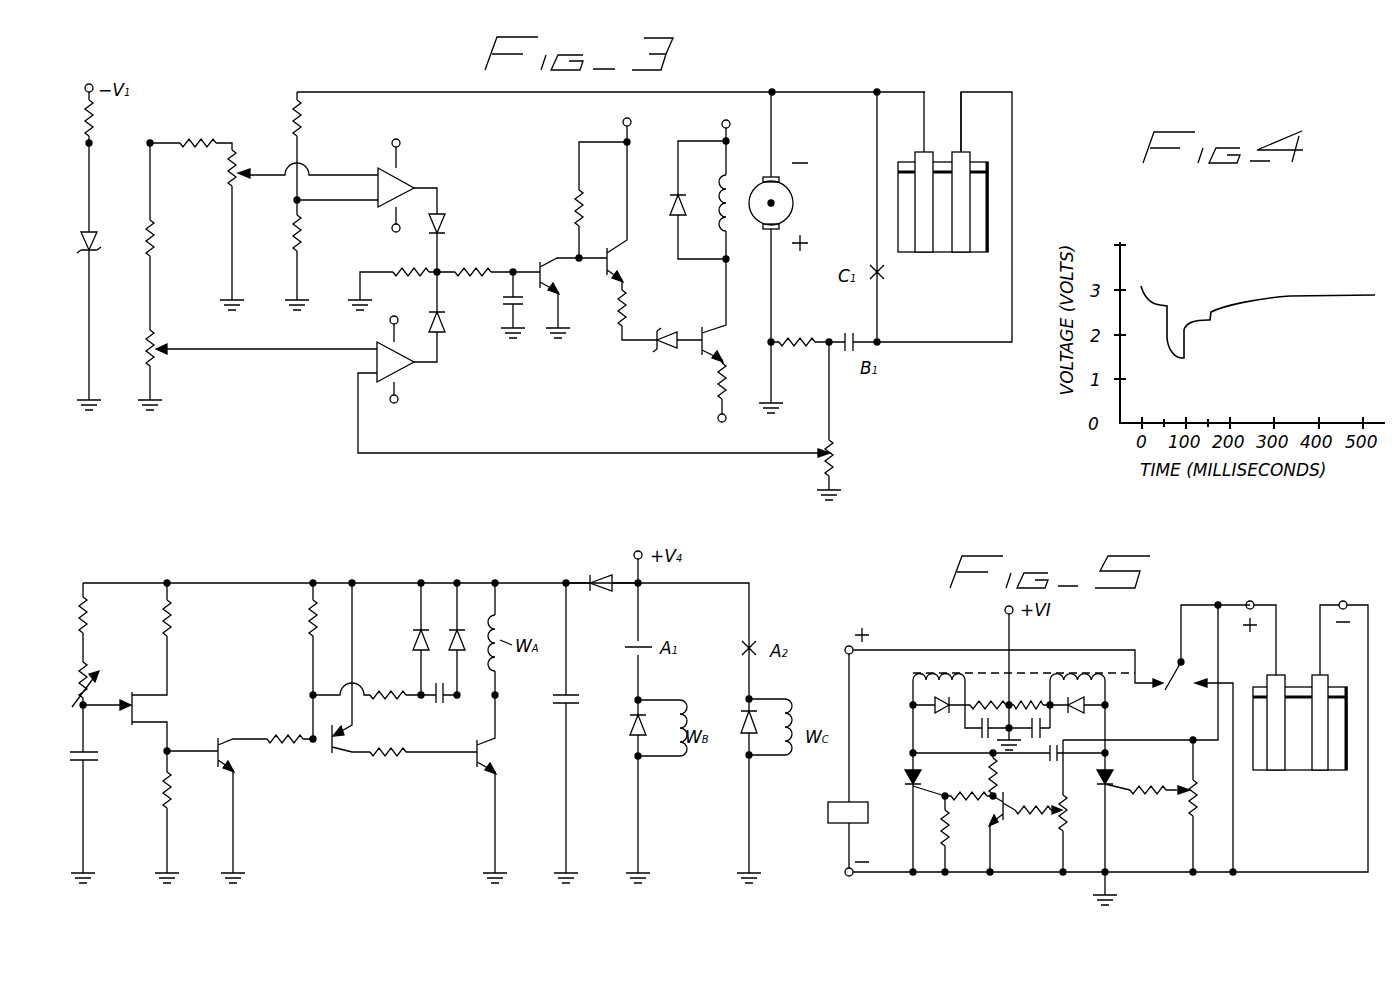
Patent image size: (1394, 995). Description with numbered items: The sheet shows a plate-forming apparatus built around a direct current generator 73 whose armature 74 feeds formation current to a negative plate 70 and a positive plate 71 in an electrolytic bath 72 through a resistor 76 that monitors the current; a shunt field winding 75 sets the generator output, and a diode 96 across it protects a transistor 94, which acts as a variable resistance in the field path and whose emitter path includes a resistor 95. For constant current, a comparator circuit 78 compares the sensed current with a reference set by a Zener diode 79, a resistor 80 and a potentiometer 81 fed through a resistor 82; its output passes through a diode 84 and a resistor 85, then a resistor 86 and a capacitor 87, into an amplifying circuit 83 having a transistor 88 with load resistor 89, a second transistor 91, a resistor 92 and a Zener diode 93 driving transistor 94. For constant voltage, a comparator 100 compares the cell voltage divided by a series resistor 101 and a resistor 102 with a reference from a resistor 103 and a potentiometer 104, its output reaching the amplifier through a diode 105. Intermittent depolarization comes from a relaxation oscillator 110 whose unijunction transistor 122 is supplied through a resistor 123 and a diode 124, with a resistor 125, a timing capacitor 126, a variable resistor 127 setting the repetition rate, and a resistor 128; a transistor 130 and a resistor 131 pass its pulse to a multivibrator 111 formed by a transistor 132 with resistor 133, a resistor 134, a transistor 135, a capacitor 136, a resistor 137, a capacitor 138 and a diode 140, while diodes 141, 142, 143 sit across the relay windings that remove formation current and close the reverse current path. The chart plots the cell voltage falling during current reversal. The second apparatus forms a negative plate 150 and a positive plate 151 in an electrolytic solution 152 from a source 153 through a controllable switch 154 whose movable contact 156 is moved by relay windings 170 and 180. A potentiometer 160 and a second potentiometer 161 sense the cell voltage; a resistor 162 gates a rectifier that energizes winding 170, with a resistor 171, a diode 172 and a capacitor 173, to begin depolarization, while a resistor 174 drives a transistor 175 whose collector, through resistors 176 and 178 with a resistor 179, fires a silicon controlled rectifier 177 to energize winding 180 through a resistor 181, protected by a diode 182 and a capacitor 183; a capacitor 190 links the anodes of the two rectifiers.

In FIG. 3, the negative plate 70 is at (921, 150).
In FIG. 3, the positive plate 71 is at (960, 152).
In FIG. 3, the electrolytic bath 72 is at (945, 218).
In FIG. 3, the direct current generator 73 is at (758, 160).
In FIG. 3, the armature 74 is at (795, 207).
In FIG. 3, the shunt field winding 75 is at (726, 186).
In FIG. 3, the resistor 76 is at (800, 335).
In FIG. 3, the comparator circuit 78 is at (408, 370).
In FIG. 3, the Zener diode 79 is at (80, 240).
In FIG. 3, the resistor 80 is at (158, 232).
In FIG. 3, the potentiometer 81 is at (158, 362).
In FIG. 3, the resistor 82 is at (100, 121).
In FIG. 3, the amplifying circuit 83 is at (543, 246).
In FIG. 3, the diode 84 is at (450, 323).
In FIG. 3, the resistor 85 is at (392, 272).
In FIG. 3, the resistor 86 is at (465, 268).
In FIG. 3, the capacitor 87 is at (505, 318).
In FIG. 3, the transistor 88 is at (548, 284).
In FIG. 3, the resistor 89 is at (576, 212).
In FIG. 3, the second transistor 91 is at (626, 268).
In FIG. 3, the resistor 92 is at (632, 312).
In FIG. 3, the Zener diode 93 is at (655, 350).
In FIG. 3, the transistor 94 is at (724, 334).
In FIG. 3, the resistor 95 is at (733, 384).
In FIG. 3, the diode 96 is at (672, 203).
In FIG. 3, the comparator 100 is at (407, 180).
In FIG. 3, the series resistor 101 is at (303, 126).
In FIG. 3, the resistor 102 is at (305, 241).
In FIG. 3, the resistor 103 is at (194, 128).
In FIG. 3, the potentiometer 104 is at (240, 185).
In FIG. 3, the diode 105 is at (447, 227).
In FIG. 5, the relaxation oscillator 110 is at (135, 684).
In FIG. 5, the multivibrator 111 is at (405, 732).
In FIG. 5, the unijunction transistor 122 is at (160, 710).
In FIG. 5, the resistor 123 is at (171, 631).
In FIG. 5, the diode 124 is at (600, 576).
In FIG. 5, the resistor 125 is at (160, 795).
In FIG. 5, the capacitor 126 is at (75, 763).
In FIG. 5, the variable resistor 127 is at (78, 696).
In FIG. 5, the resistor 128 is at (88, 627).
In FIG. 5, the transistor 130 is at (236, 772).
In FIG. 5, the resistor 131 is at (285, 738).
In FIG. 5, the transistor 132 is at (330, 760).
In FIG. 5, the resistor 133 is at (308, 636).
In FIG. 5, the resistor 134 is at (396, 766).
In FIG. 5, the transistor 135 is at (495, 753).
In FIG. 5, the capacitor 136 is at (573, 710).
In FIG. 5, the resistor 137 is at (393, 690).
In FIG. 5, the capacitor 138 is at (444, 704).
In FIG. 5, the diode 140 is at (416, 639).
In FIG. 5, the diode 141 is at (463, 641).
In FIG. 5, the diode 142 is at (632, 712).
In FIG. 5, the diode 143 is at (735, 712).
In FIG. 5, the negative plate 150 is at (1320, 672).
In FIG. 5, the positive plate 151 is at (1272, 672).
In FIG. 5, the electrolytic solution 152 is at (1297, 756).
In FIG. 5, the source 153 is at (860, 825).
In FIG. 5, the controllable switch 154 is at (1172, 639).
In FIG. 5, the movable contact 156 is at (1175, 686).
In FIG. 5, the potentiometer 160 is at (1201, 796).
In FIG. 5, the second potentiometer 161 is at (1065, 816).
In FIG. 5, the resistor 162 is at (1147, 793).
In FIG. 5, the relay winding 170 is at (1055, 675).
In FIG. 5, the resistor 171 is at (1034, 703).
In FIG. 5, the diode 172 is at (1088, 690).
In FIG. 5, the capacitor 173 is at (1045, 734).
In FIG. 5, the resistor 174 is at (1030, 813).
In FIG. 5, the transistor 175 is at (991, 830).
In FIG. 5, the resistor 176 is at (956, 800).
In FIG. 5, the silicon controlled rectifier 177 is at (905, 776).
In FIG. 5, the resistor 178 is at (991, 781).
In FIG. 5, the resistor 179 is at (945, 847).
In FIG. 5, the relay winding 180 is at (911, 676).
In FIG. 5, the resistor 181 is at (1002, 703).
In FIG. 5, the diode 182 is at (948, 714).
In FIG. 5, the capacitor 183 is at (978, 738).
In FIG. 5, the capacitor 190 is at (1047, 755).